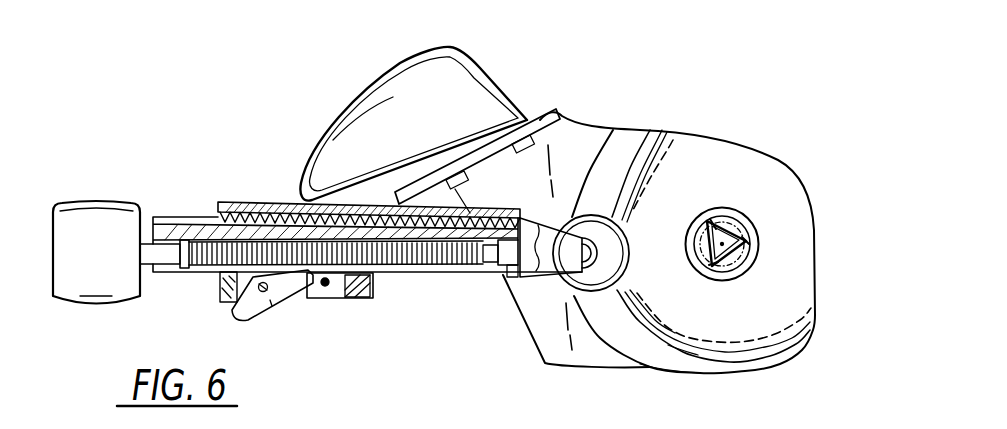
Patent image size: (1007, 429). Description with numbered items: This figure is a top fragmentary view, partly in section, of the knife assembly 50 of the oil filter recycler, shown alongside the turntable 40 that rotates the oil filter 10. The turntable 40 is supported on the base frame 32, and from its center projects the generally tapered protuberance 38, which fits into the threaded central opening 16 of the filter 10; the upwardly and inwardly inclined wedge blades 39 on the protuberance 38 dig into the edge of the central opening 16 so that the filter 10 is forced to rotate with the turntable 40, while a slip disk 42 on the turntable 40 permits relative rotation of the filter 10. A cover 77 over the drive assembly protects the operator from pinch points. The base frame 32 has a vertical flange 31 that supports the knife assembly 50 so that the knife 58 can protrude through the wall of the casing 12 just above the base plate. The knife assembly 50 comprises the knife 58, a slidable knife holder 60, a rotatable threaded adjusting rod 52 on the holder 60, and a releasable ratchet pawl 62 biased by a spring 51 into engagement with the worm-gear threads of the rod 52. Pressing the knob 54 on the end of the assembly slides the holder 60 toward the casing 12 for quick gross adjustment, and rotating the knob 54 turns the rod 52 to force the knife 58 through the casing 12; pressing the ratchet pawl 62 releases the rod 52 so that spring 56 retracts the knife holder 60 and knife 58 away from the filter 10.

The oil filter 10 is at (656, 349).
The casing 12 is at (684, 356).
The threaded central opening 16 is at (744, 268).
The vertical flange 31 is at (538, 112).
The base frame 32 is at (538, 345).
The protuberance 38 is at (747, 226).
The wedge blades 39 is at (748, 248).
The turntable 40 is at (656, 130).
The slip disk 42 is at (676, 138).
The knife assembly 50 is at (292, 131).
The spring 51 is at (225, 302).
The threaded adjusting rod 52 is at (447, 266).
The knob 54 is at (86, 201).
The spring 56 is at (250, 201).
The knife 58 is at (560, 297).
The knife holder 60 is at (398, 273).
The ratchet pawl 62 is at (294, 301).
The cover 77 is at (621, 131).